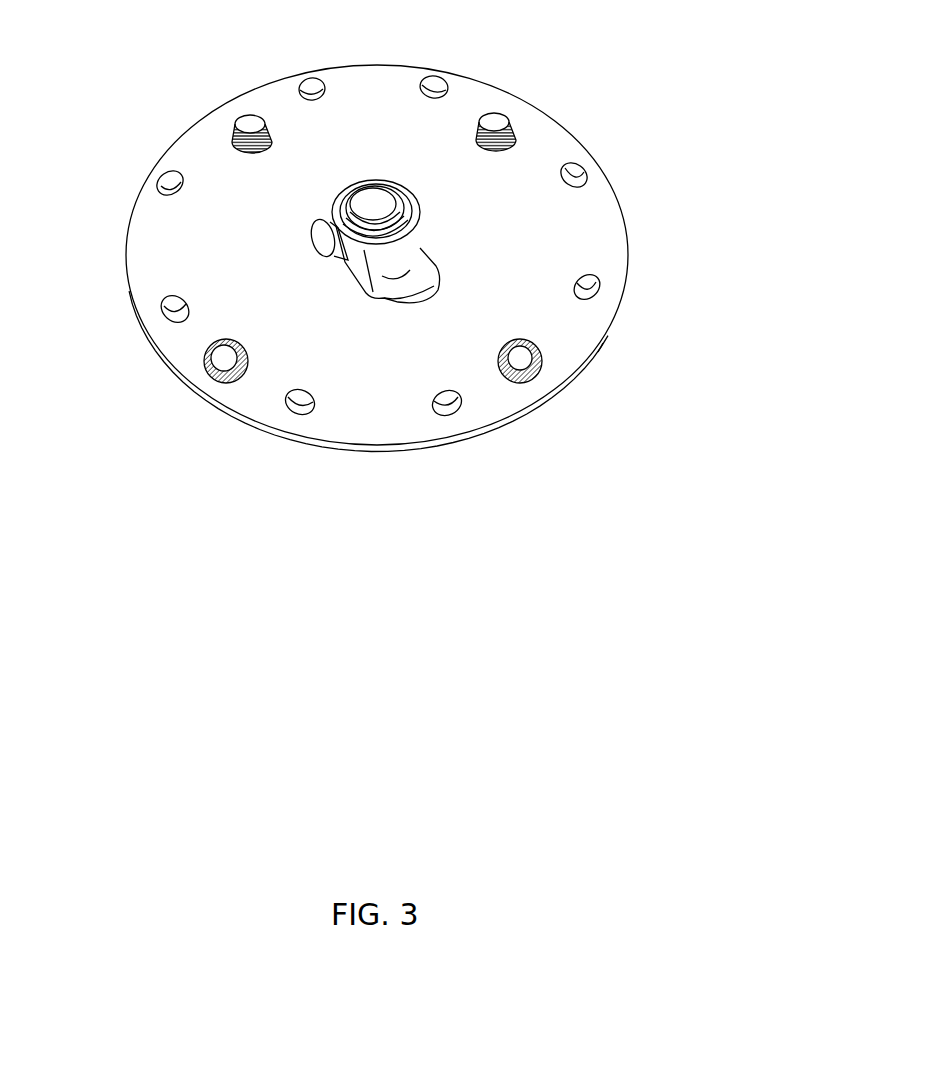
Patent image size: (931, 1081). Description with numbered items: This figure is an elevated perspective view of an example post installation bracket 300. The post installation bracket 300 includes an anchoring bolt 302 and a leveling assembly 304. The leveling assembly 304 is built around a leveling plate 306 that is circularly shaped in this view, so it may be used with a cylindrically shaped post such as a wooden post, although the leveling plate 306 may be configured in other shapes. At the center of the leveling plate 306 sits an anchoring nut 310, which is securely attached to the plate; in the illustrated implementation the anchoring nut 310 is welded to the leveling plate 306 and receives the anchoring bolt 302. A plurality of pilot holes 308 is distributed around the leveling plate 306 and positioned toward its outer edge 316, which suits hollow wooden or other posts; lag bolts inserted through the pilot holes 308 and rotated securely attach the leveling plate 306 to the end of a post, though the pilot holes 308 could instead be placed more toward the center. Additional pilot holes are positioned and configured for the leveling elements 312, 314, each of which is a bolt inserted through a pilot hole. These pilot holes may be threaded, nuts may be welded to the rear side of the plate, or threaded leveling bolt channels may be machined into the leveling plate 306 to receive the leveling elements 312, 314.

The post installation bracket 300 is at (656, 816).
The anchoring bolt 302 is at (386, 218).
The leveling assembly 304 is at (140, 131).
The leveling plate 306 is at (157, 226).
The pilot holes 308 is at (598, 273).
The anchoring nut 310 is at (348, 248).
The leveling element 312 is at (201, 383).
The leveling element 314 is at (510, 396).
The outer edge 316 is at (600, 349).